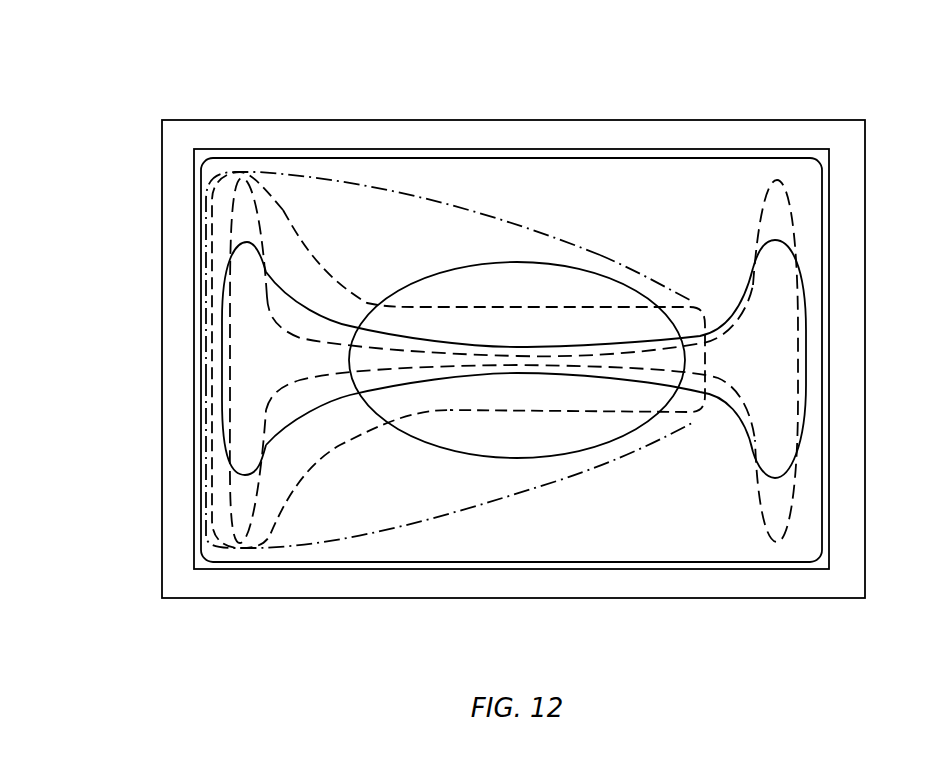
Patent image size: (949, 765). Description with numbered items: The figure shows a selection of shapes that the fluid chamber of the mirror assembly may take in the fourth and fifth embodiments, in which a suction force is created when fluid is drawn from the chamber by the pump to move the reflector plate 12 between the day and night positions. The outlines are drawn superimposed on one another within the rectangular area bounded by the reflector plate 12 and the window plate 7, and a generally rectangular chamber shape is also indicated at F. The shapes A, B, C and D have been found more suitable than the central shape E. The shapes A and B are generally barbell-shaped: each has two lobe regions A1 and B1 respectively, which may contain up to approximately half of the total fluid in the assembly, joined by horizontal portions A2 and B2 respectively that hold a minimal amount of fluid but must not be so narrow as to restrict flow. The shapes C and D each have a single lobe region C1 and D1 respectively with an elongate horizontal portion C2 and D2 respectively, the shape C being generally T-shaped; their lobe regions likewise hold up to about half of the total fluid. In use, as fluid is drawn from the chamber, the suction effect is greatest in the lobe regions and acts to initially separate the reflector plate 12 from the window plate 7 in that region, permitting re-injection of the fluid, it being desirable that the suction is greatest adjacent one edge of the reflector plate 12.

The window plate 7 is at (850, 132).
The reflector plate 12 is at (772, 152).
The generally rectangular chamber shape F is at (748, 562).
The chamber shape E is at (537, 262).
The barbell-shaped chamber shape A is at (293, 288).
The lobe regions of chamber shape A A1 is at (220, 340).
The horizontal portion of chamber shape A A2 is at (477, 375).
The barbell-shaped chamber shape B is at (337, 345).
The lobe regions of chamber shape B B1 is at (229, 378).
The horizontal portion of chamber shape B B2 is at (513, 360).
The T-shaped chamber shape C is at (412, 305).
The lobe region of chamber shape C C1 is at (263, 517).
The elongate horizontal portion of chamber shape C C2 is at (670, 310).
The chamber shape D is at (478, 210).
The lobe region of chamber shape D D1 is at (352, 525).
The elongate horizontal portion of chamber shape D D2 is at (683, 302).